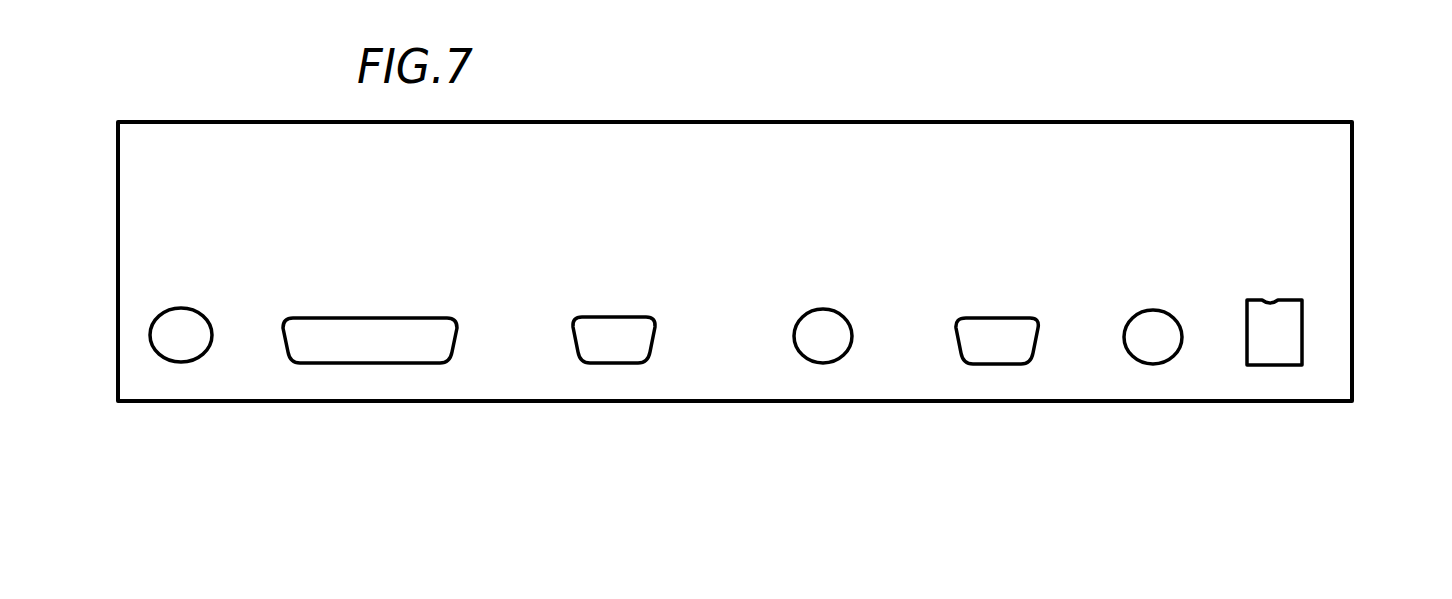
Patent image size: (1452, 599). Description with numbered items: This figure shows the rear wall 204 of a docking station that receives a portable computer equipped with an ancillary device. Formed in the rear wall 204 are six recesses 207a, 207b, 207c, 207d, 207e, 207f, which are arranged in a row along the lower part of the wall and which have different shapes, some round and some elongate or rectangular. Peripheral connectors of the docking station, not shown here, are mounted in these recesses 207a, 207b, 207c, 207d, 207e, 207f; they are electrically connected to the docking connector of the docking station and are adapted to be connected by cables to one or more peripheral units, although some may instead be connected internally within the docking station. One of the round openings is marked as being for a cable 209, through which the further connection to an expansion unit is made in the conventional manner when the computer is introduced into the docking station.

The rear wall 204 is at (1340, 230).
The recess 207a is at (180, 360).
The recess 207b is at (338, 362).
The recess 207c is at (600, 362).
The recess 207d is at (994, 363).
The recess 207e is at (1158, 363).
The recess 207f is at (1288, 364).
The cable 209 is at (820, 362).